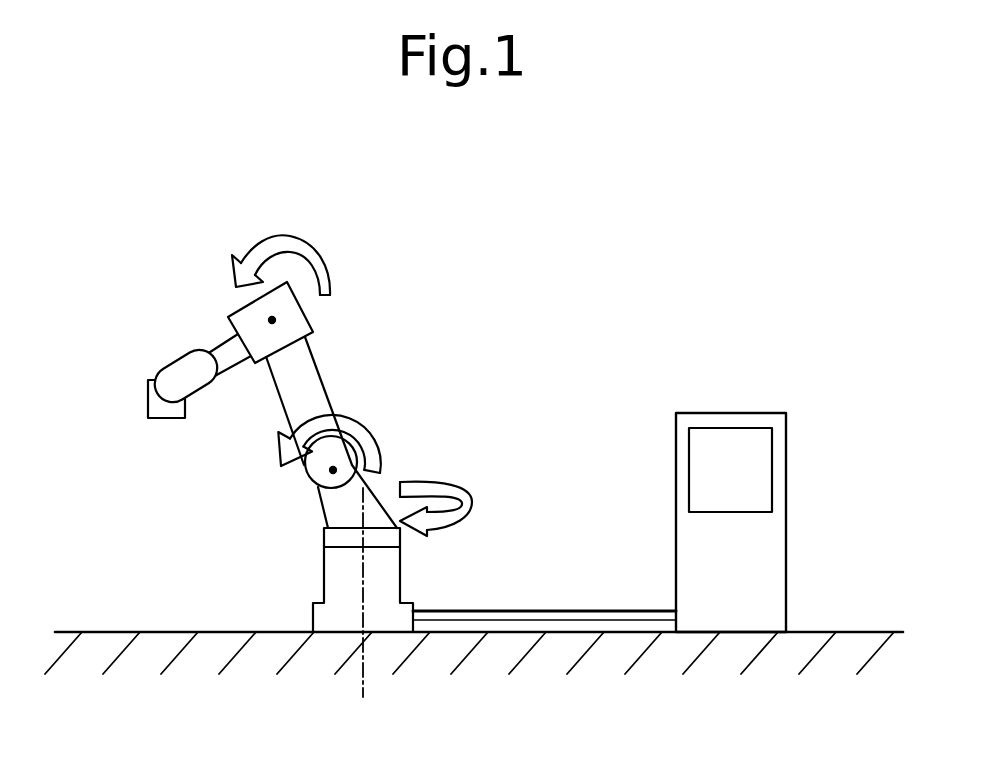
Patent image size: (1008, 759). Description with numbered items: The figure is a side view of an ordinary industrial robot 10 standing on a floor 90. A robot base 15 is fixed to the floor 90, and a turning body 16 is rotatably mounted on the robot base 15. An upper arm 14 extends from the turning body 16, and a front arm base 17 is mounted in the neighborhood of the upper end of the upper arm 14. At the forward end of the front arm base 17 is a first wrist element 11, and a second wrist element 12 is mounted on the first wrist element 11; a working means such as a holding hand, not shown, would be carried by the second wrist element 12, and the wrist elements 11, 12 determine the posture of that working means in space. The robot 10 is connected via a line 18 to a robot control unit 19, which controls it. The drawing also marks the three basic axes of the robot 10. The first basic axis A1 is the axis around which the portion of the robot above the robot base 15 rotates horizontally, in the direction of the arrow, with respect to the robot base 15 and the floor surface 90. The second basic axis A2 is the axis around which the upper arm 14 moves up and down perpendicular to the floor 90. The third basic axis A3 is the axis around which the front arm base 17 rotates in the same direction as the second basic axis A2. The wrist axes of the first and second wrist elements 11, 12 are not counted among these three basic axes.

The industrial robot 10 is at (306, 481).
The first wrist element 11 is at (185, 363).
The second wrist element 12 is at (157, 408).
The upper arm 14 is at (288, 390).
The robot base 15 is at (390, 582).
The turning body 16 is at (340, 507).
The front arm base 17 is at (253, 320).
The line 18 is at (572, 610).
The robot control unit 19 is at (763, 420).
The floor 90 is at (842, 632).
The first basic axis A1 is at (362, 685).
The second basic axis A2 is at (333, 470).
The third basic axis A3 is at (272, 320).